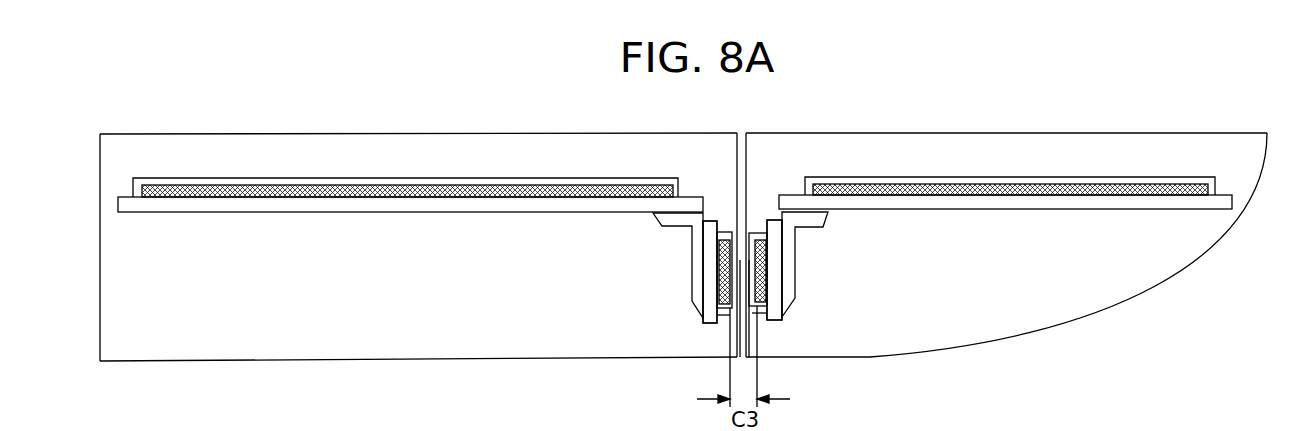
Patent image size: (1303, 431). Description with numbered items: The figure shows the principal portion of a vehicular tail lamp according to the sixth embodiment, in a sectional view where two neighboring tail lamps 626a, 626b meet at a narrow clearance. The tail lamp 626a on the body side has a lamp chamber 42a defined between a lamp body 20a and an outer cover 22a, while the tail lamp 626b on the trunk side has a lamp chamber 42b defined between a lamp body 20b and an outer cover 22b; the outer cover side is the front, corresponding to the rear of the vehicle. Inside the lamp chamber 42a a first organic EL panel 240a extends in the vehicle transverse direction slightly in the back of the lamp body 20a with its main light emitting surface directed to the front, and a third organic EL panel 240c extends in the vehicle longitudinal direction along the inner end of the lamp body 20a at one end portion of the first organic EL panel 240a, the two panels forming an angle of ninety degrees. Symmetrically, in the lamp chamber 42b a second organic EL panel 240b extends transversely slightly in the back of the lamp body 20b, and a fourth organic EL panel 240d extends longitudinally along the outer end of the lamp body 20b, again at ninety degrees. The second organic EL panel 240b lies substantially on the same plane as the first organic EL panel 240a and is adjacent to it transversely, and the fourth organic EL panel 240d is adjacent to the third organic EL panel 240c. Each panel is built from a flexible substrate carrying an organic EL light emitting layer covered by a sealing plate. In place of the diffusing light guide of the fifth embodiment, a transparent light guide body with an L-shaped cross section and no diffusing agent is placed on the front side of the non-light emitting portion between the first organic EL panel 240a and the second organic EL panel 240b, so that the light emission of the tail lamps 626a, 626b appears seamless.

The tail lamp 626b is at (418, 234).
The tail lamp 626a is at (1016, 200).
The lamp body 20b is at (545, 133).
The lamp body 20a is at (948, 133).
The outer cover 22b is at (227, 356).
The outer cover 22a is at (1145, 279).
The lamp chamber 42b is at (410, 205).
The lamp chamber 42a is at (1005, 204).
The second organic EL panel 240b is at (547, 213).
The first organic EL panel 240a is at (935, 212).
The fourth organic EL panel 240d is at (712, 226).
The third organic EL panel 240c is at (777, 226).